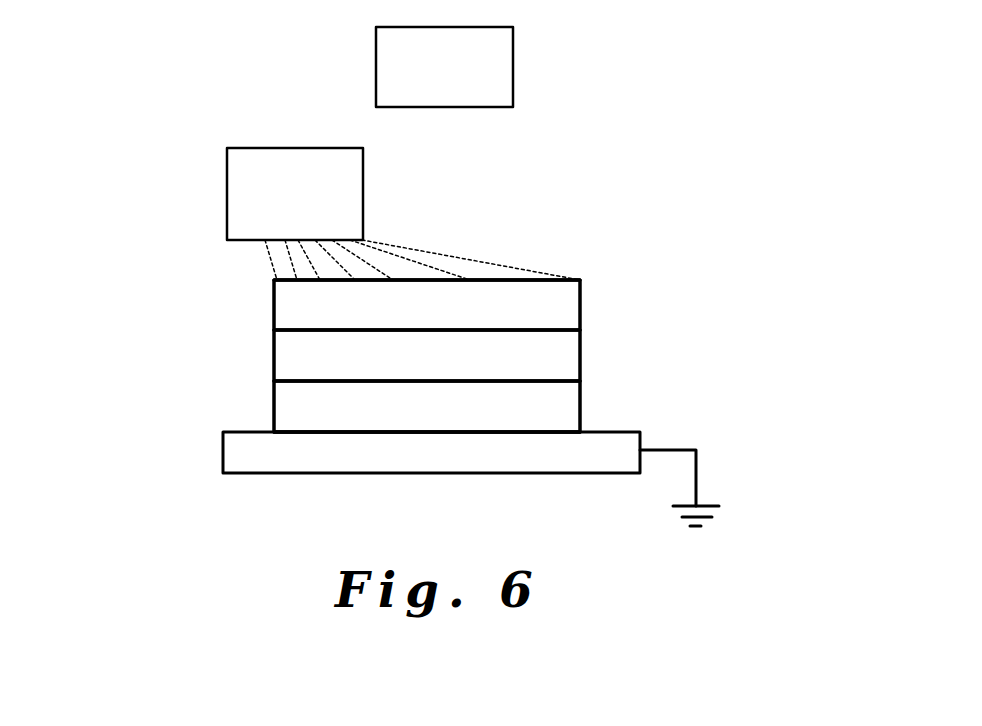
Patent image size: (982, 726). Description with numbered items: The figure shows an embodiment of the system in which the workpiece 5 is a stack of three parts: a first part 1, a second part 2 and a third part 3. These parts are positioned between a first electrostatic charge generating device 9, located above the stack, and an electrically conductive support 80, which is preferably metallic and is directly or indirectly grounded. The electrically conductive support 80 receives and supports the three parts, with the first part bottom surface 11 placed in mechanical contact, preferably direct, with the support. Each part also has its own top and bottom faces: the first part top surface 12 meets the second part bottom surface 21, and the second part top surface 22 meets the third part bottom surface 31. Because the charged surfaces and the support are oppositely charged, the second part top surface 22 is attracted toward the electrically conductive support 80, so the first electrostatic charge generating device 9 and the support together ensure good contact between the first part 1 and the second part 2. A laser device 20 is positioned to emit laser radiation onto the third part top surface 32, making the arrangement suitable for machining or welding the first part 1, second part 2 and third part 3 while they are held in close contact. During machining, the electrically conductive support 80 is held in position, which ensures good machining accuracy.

The first part 1 is at (557, 407).
The second part 2 is at (553, 348).
The third part 3 is at (553, 300).
The workpiece 5 is at (274, 281).
The first electrostatic charge generating device 9 is at (277, 183).
The first part bottom surface 11 is at (562, 432).
The first part top surface 12 is at (305, 383).
The laser device 20 is at (493, 78).
The second part bottom surface 21 is at (562, 381).
The second part top surface 22 is at (305, 332).
The third part bottom surface 31 is at (562, 329).
The third part top surface 32 is at (305, 282).
The electrically conductive support 80 is at (605, 450).